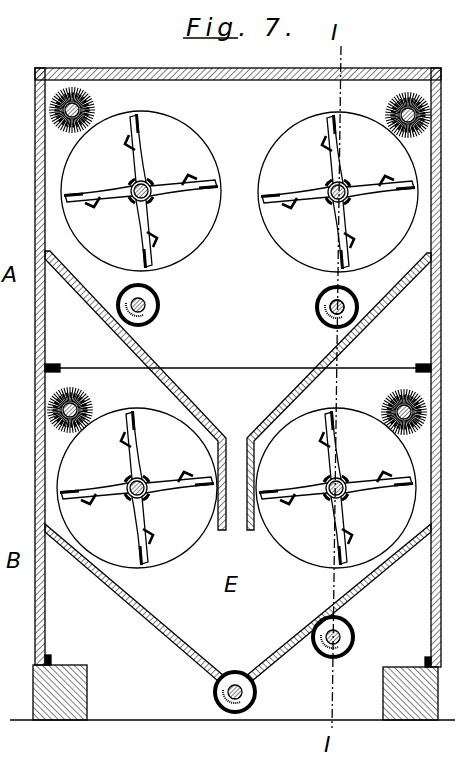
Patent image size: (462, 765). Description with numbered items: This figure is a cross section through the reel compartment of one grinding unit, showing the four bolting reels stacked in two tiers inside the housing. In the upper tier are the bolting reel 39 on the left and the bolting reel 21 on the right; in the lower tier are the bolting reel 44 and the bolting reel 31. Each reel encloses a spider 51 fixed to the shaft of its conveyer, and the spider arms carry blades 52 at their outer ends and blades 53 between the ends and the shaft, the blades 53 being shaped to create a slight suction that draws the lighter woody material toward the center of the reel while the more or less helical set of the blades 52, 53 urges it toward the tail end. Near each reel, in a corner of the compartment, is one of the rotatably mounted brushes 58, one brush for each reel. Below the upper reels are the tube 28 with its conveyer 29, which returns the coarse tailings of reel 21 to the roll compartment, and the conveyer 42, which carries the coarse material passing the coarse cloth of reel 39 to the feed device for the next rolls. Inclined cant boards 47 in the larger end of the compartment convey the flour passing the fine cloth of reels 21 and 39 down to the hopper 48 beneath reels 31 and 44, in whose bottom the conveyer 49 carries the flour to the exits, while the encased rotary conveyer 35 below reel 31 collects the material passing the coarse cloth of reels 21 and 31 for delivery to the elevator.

The bolting reel 21 is at (301, 123).
The tube 28 is at (317, 303).
The conveyer 29 is at (348, 301).
The bolting reel 31 is at (357, 407).
The rotary conveyer 35 is at (354, 636).
The bolting reel 39 is at (201, 141).
The conveyer 42 is at (160, 305).
The bolting reel 44 is at (135, 409).
The cant boards 47 is at (121, 333).
The hopper 48 is at (116, 588).
The conveyer 49 is at (256, 692).
The spiders 51 is at (183, 188).
The blades 52 is at (212, 176).
The blades 53 is at (186, 173).
The brushes 58 is at (96, 106).